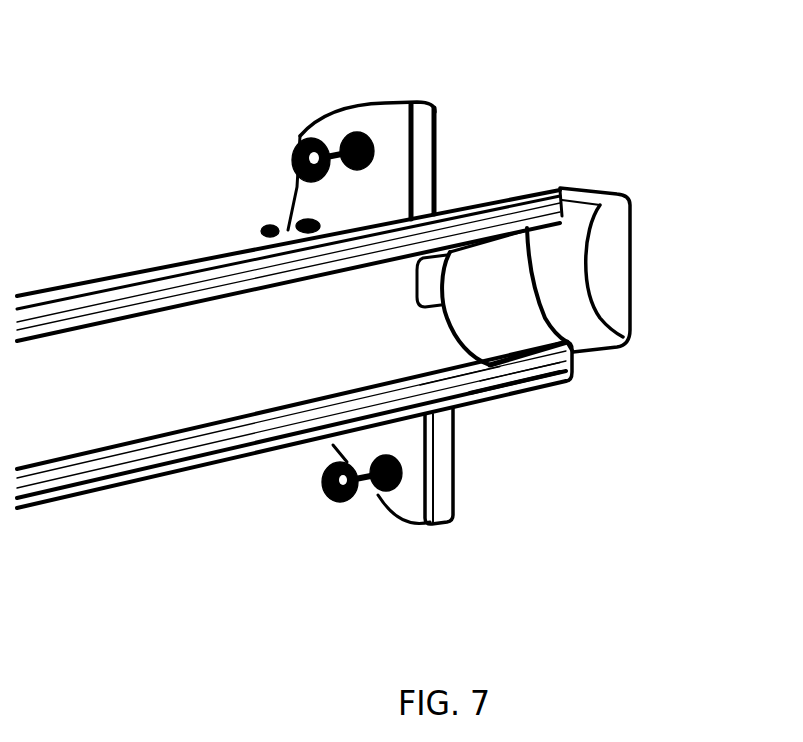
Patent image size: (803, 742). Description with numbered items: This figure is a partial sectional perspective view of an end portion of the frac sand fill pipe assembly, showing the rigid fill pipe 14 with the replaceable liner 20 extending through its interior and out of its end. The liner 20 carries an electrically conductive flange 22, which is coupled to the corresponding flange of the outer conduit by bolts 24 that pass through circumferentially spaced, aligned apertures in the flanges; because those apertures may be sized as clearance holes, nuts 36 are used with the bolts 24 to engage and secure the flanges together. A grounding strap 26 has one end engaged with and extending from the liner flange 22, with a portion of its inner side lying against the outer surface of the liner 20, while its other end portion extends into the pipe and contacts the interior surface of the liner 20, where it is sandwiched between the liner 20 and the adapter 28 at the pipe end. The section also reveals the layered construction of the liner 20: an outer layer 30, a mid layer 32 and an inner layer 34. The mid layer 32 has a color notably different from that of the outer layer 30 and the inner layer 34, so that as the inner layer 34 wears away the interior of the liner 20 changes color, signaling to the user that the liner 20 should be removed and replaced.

The fill pipe 14 is at (55, 505).
The liner 20 is at (143, 480).
The electrically conductive flange 22 is at (421, 140).
The bolts 24 is at (378, 492).
The grounding strap 26 is at (465, 242).
The adapter 28 is at (570, 265).
The outer layer 30 is at (510, 385).
The mid layer 32 is at (530, 370).
The inner layer 34 is at (453, 380).
The nuts 36 is at (353, 488).